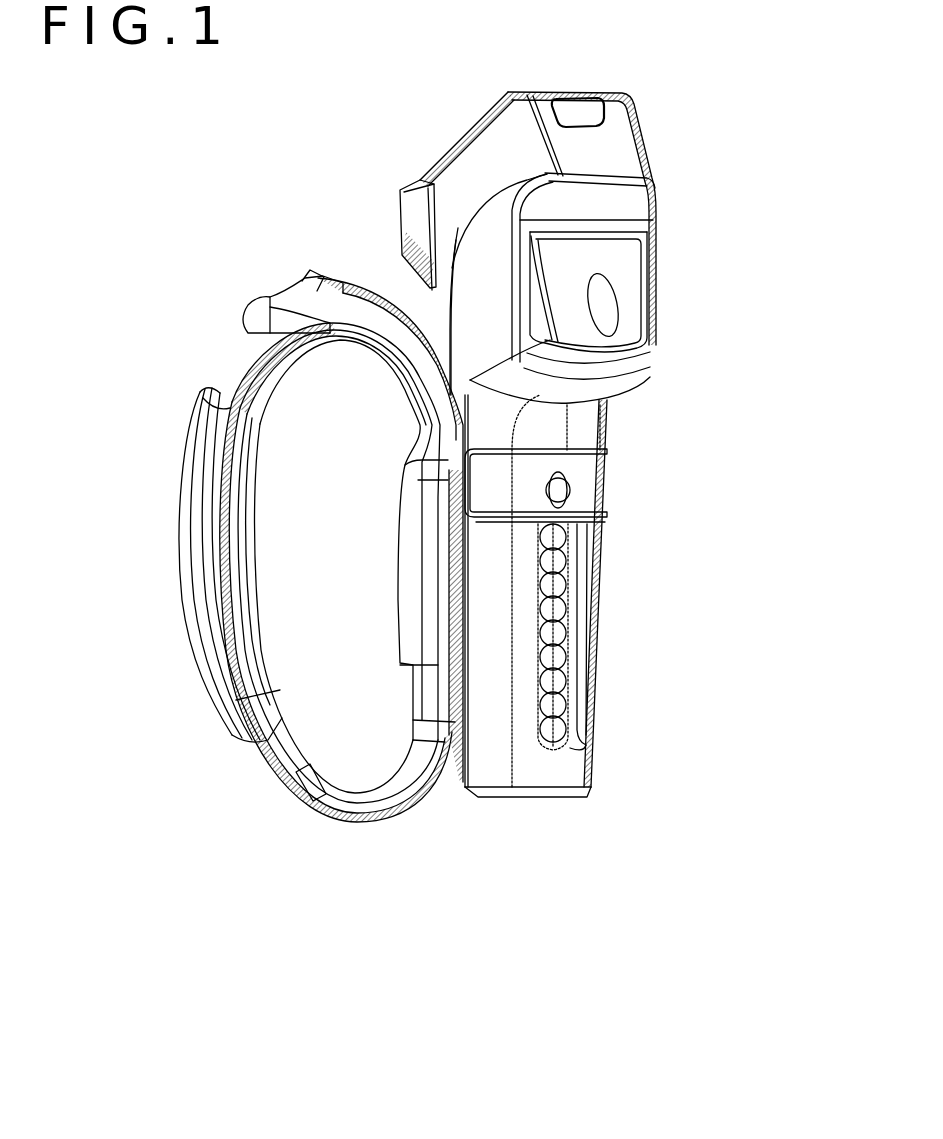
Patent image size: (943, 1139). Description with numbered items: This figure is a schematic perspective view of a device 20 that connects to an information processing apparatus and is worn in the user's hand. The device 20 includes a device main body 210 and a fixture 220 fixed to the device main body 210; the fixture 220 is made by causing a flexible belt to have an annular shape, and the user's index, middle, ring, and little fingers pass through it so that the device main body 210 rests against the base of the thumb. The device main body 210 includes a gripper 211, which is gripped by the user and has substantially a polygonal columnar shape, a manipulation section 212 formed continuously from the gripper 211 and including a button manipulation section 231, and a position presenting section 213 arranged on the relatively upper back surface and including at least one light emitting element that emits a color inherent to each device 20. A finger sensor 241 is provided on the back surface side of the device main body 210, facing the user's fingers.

The device 20 is at (195, 947).
The device main body 210 is at (550, 832).
The gripper 211 is at (600, 566).
The manipulation section 212 is at (715, 98).
The position presenting section 213 is at (578, 105).
The fixture 220 is at (197, 657).
The button manipulation section 231 is at (663, 260).
The finger sensor 241 is at (582, 490).